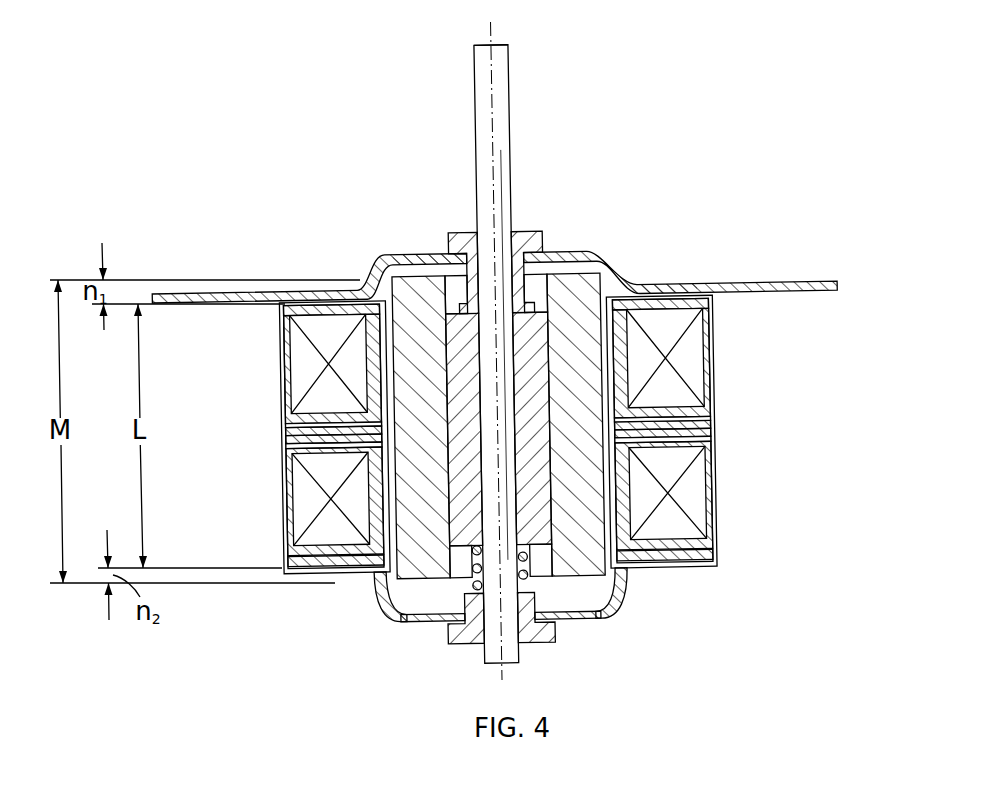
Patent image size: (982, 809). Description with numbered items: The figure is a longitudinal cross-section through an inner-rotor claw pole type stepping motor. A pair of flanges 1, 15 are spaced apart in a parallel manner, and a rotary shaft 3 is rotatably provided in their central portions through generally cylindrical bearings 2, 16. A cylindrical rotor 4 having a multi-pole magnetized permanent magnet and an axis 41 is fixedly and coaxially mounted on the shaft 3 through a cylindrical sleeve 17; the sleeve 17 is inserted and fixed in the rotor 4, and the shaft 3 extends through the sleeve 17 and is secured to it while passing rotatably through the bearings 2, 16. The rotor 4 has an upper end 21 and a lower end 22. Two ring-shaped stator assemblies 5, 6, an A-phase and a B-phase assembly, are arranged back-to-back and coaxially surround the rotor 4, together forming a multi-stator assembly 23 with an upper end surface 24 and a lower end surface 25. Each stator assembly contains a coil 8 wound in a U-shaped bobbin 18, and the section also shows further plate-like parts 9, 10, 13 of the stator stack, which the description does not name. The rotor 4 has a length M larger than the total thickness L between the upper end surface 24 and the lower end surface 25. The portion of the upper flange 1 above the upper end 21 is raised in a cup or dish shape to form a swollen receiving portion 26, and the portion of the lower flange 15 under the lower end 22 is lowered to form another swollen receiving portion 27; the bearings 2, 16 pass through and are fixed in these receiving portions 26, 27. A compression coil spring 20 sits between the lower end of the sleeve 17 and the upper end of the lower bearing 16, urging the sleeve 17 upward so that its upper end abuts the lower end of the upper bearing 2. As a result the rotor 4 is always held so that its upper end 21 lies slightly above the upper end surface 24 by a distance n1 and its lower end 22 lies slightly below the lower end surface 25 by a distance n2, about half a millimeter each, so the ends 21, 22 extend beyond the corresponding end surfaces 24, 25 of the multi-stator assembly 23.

The flange 1 is at (680, 254).
The bearing 2 is at (459, 231).
The rotary shaft 3 is at (510, 163).
The rotor 4 is at (589, 494).
The stator assembly 5 is at (714, 394).
The stator assembly 6 is at (713, 464).
The coil 8 is at (294, 346).
The yoke plate 9 is at (310, 297).
The intermediate yoke plate 10 is at (298, 434).
The intermediate yoke plate 13 is at (308, 427).
The flange 15 is at (658, 573).
The bearing 16 is at (460, 619).
The cylindrical sleeve 17 is at (542, 341).
The U-shaped bobbin 18 is at (651, 293).
The compression coil spring 20 is at (526, 580).
The upper end 21 is at (308, 234).
The lower end 22 is at (423, 577).
The multi-stator assembly 23 is at (723, 458).
The upper end surface 24 is at (681, 295).
The lower end surface 25 is at (684, 575).
The swollen receiving portion 26 is at (424, 257).
The swollen receiving portion 27 is at (382, 610).
The axis 41 is at (509, 48).